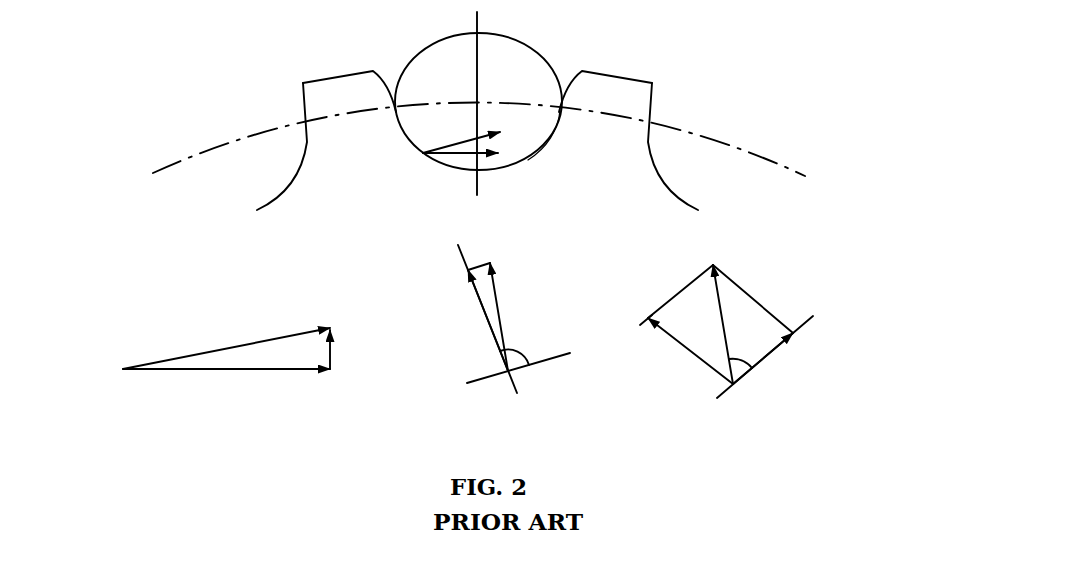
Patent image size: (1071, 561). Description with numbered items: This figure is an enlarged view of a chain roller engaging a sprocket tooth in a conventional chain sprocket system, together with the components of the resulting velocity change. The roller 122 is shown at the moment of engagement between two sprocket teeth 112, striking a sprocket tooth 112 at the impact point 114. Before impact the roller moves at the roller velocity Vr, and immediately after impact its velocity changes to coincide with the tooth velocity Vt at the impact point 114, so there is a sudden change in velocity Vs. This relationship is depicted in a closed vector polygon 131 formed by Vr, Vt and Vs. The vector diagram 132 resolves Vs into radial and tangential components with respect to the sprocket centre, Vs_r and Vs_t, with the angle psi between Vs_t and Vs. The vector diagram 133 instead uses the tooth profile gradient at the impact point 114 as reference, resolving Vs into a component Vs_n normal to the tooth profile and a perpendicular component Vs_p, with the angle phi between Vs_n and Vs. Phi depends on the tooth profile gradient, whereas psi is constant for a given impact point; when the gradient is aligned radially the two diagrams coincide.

The sprocket tooth 112 is at (348, 92).
The roller 122 is at (420, 70).
The impact point 114 is at (423, 153).
The closed vector polygon 131 is at (225, 338).
The vector diagram 132 is at (453, 281).
The vector diagram 133 is at (777, 280).